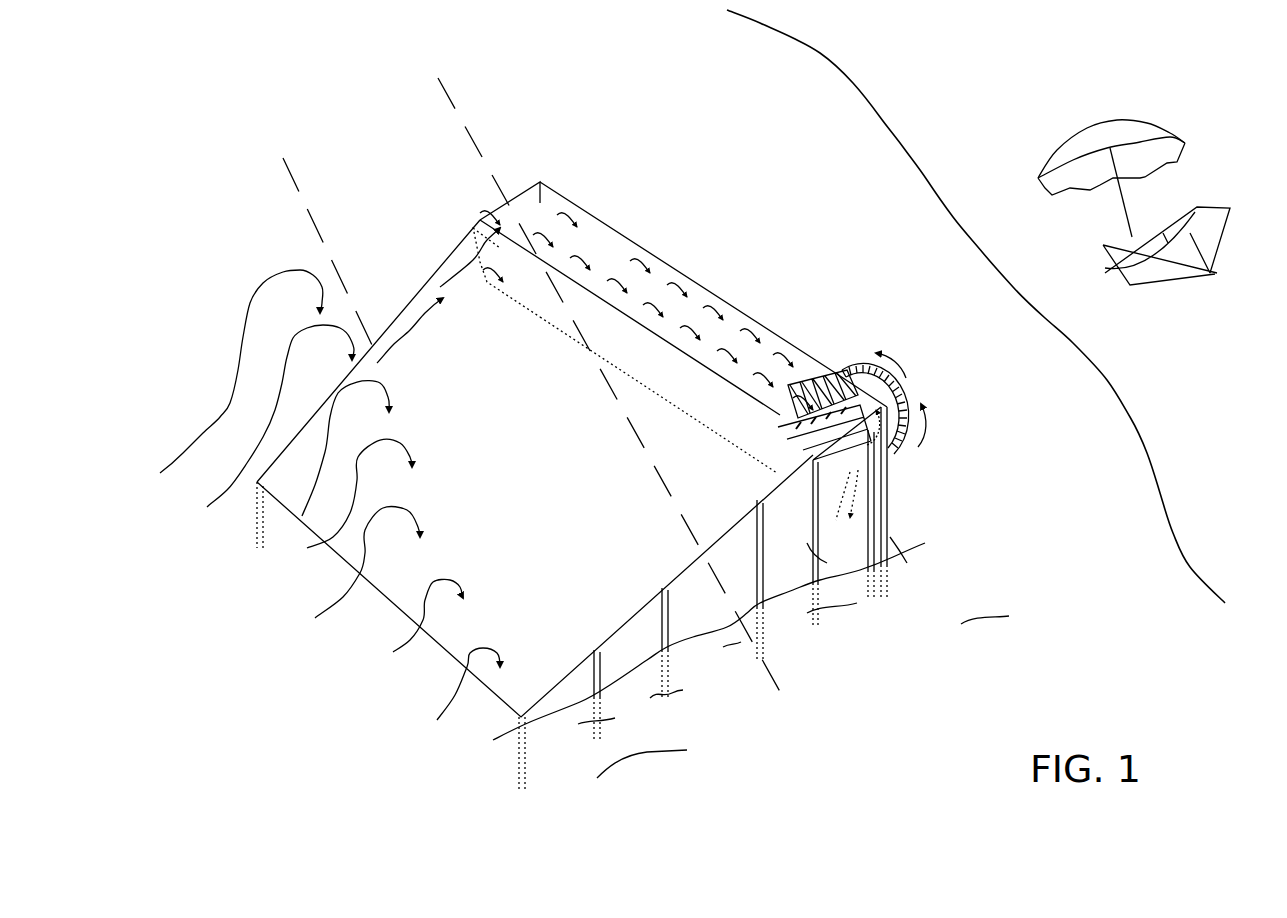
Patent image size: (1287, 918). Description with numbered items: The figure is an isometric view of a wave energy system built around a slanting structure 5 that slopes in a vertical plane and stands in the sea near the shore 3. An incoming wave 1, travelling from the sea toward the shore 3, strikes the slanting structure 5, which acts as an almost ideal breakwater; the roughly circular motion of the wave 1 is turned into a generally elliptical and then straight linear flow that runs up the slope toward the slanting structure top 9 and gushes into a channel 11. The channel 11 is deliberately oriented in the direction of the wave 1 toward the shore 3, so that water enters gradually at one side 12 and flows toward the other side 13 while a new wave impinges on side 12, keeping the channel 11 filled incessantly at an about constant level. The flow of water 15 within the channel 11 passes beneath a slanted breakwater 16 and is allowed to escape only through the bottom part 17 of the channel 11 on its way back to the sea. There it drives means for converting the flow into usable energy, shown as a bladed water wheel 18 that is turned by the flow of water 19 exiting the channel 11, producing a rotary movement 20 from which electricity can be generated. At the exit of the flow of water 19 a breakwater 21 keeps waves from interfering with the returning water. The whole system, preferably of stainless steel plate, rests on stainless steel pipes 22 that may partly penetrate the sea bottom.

The wave 1 is at (445, 80).
The shore 3 is at (822, 50).
The slanting structure 5 is at (460, 237).
The slanting structure top 9 is at (443, 267).
The channel 11 is at (680, 270).
The one side of channel 12 is at (503, 200).
The other side of channel 13 is at (743, 397).
The flow of water 15 is at (635, 263).
The slanted breakwater 16 is at (827, 373).
The bottom part of channel 17 is at (770, 450).
The water wheel 18 is at (897, 450).
The flow of water exiting channel 19 is at (857, 493).
The rotary movement 20 is at (905, 388).
The breakwater 21 is at (863, 572).
The stainless steel pipes 22 is at (745, 616).